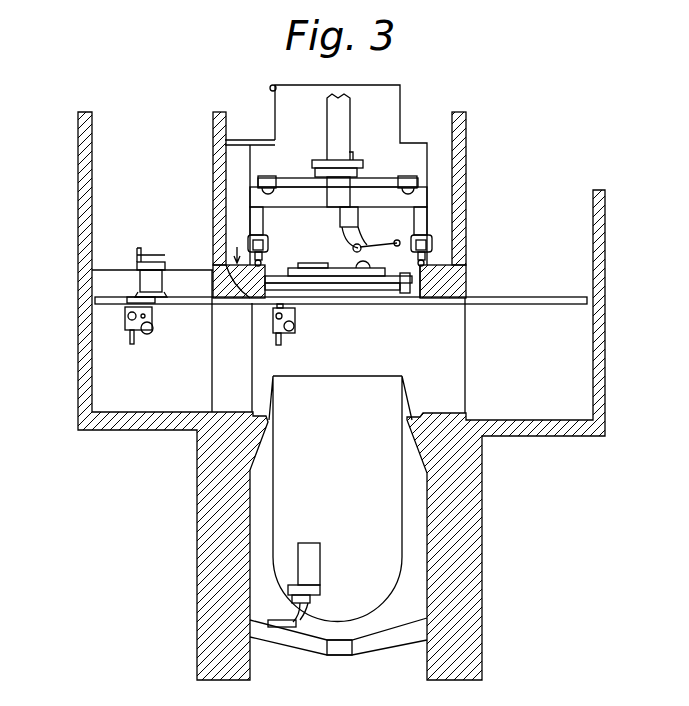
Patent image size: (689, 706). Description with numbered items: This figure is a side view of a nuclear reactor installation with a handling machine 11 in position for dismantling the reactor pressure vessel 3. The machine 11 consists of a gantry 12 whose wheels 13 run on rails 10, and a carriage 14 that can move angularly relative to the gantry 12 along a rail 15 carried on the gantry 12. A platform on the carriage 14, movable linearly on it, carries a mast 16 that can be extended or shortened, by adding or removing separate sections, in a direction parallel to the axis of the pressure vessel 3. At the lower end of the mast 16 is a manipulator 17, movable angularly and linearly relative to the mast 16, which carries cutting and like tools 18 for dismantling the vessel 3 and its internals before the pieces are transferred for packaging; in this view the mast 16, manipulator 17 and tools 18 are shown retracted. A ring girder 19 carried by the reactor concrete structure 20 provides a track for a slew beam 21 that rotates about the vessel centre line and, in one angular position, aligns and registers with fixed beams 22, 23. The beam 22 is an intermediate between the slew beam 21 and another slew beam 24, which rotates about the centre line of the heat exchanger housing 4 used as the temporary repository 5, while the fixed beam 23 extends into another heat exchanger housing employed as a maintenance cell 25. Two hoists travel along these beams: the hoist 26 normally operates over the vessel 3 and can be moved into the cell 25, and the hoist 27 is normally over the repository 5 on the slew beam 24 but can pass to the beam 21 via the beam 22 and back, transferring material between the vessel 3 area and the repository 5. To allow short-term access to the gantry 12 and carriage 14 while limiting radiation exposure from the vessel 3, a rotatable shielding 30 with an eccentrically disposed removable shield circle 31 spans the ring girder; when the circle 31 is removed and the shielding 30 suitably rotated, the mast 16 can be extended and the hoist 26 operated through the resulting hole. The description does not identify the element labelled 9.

The reactor pressure vessel 3 is at (377, 508).
The heat exchanger housing 4 is at (84, 151).
The temporary repository 5 is at (145, 181).
The slot 9 is at (233, 243).
The rails 10 is at (232, 273).
The handling machine 11 is at (358, 306).
The gantry 12 is at (252, 222).
The wheels 13 is at (264, 259).
The carriage 14 is at (290, 180).
The rail 15 is at (288, 188).
The mast 16 is at (333, 183).
The manipulator 17 is at (353, 250).
The cutting tools 18 is at (385, 240).
The ring girder 19 is at (256, 292).
The reactor concrete structure 20 is at (448, 282).
The slew beam 21 is at (355, 303).
The fixed beam 22 is at (237, 286).
The fixed beam 23 is at (517, 304).
The slew beam 24 is at (178, 304).
The maintenance cell 25 is at (577, 331).
The hoist 26 is at (295, 330).
The hoist 27 is at (127, 334).
The rotatable shielding 30 is at (366, 320).
The removable shield circle 31 is at (317, 246).